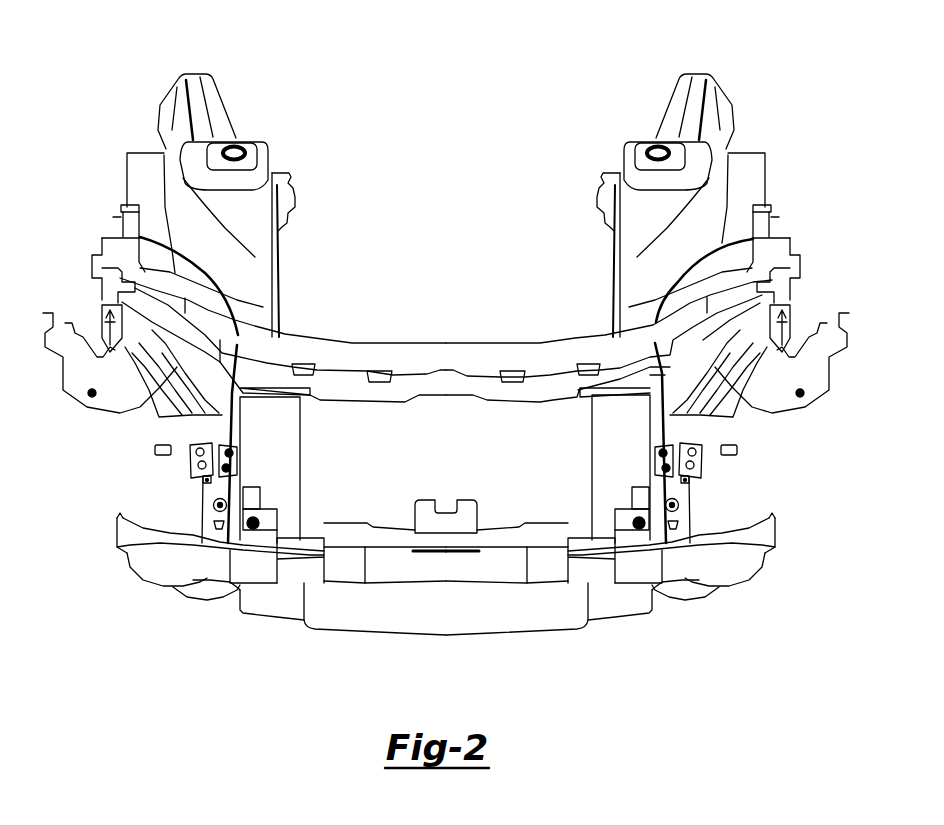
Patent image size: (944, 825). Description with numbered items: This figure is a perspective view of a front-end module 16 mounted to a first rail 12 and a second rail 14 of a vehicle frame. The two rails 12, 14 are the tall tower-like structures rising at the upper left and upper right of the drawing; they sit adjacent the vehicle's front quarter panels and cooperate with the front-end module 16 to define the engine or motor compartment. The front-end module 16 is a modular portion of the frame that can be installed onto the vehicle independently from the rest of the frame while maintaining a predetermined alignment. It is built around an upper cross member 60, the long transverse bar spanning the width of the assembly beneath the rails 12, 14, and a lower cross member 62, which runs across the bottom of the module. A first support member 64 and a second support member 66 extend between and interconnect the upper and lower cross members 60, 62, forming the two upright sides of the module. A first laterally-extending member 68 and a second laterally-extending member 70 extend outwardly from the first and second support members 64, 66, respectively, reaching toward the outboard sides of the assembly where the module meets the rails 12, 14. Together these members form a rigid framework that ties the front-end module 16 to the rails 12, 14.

The first rail 12 is at (221, 100).
The second rail 14 is at (671, 102).
The front-end module 16 is at (589, 627).
The upper cross member 60 is at (420, 347).
The lower cross member 62 is at (280, 617).
The first support member 64 is at (205, 523).
The second support member 66 is at (697, 523).
The first laterally-extending member 68 is at (113, 407).
The second laterally-extending member 70 is at (781, 407).